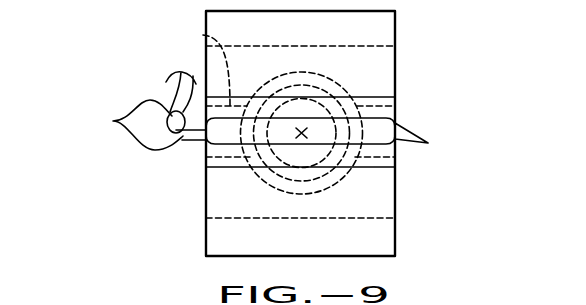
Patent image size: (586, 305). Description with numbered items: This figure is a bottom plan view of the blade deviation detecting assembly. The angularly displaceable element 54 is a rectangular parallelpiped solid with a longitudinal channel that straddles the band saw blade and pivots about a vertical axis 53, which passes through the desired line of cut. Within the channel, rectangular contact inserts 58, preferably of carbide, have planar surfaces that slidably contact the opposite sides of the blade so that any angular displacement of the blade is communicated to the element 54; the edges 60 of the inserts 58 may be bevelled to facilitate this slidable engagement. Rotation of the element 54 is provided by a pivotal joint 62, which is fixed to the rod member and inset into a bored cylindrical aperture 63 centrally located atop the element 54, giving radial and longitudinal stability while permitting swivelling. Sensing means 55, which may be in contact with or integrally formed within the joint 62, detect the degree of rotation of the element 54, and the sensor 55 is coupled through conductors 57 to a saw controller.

The vertical axis 53 is at (302, 133).
The angularly displaceable element 54 is at (395, 78).
The sensing means 55 is at (203, 35).
The conductors 57 is at (113, 121).
The rectangular contact inserts 58 is at (206, 162).
The edges 60 is at (428, 143).
The pivotal joint 62 is at (333, 182).
The bored cylindrical aperture 63 is at (275, 172).